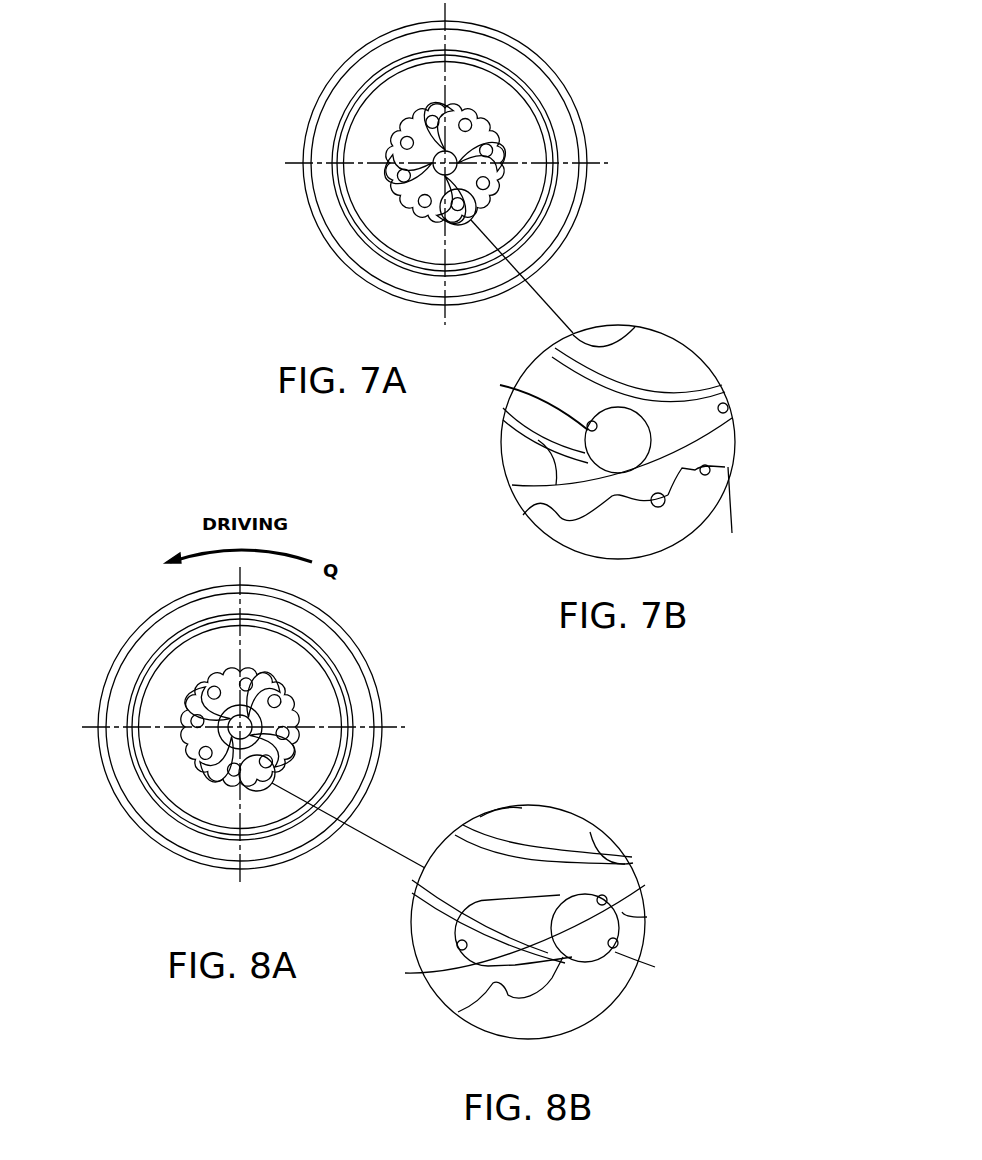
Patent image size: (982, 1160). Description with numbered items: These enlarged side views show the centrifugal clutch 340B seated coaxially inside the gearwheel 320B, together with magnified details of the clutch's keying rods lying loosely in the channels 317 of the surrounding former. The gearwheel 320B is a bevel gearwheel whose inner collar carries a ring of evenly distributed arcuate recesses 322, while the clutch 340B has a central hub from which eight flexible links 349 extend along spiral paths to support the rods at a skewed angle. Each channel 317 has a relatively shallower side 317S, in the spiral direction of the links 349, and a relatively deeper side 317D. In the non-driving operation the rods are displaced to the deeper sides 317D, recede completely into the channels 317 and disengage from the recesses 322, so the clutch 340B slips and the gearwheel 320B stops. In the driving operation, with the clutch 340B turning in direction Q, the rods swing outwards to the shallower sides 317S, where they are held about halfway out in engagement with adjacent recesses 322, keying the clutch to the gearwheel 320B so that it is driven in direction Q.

In FIG. 7A, the gearwheel 320B is at (565, 66).
In FIG. 8A, the gearwheel 320B is at (384, 644).
In FIG. 7A, the centrifugal clutch 340B is at (502, 134).
In FIG. 8A, the centrifugal clutch 340B is at (178, 695).
In FIG. 7B, the channels 317 is at (658, 413).
In FIG. 8B, the channels 317 is at (527, 903).
In FIG. 7B, the deeper side 317D is at (517, 385).
In FIG. 8B, the deeper side 317D is at (470, 947).
In FIG. 7B, the shallower side 317S is at (728, 405).
In FIG. 8B, the shallower side 317S is at (605, 901).
In FIG. 7B, the flexible links 349 is at (523, 430).
In FIG. 8B, the flexible links 349 is at (440, 912).
In FIG. 7B, the recesses 322 is at (664, 497).
In FIG. 8B, the recesses 322 is at (614, 948).